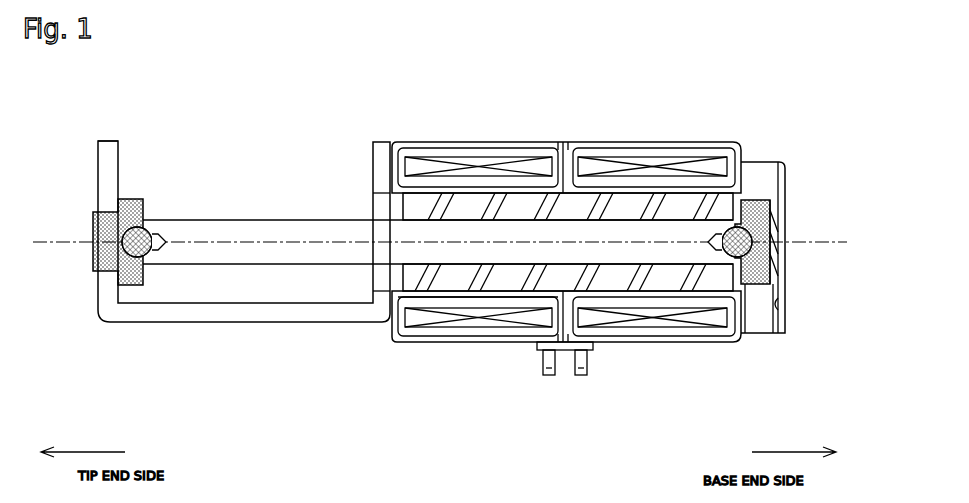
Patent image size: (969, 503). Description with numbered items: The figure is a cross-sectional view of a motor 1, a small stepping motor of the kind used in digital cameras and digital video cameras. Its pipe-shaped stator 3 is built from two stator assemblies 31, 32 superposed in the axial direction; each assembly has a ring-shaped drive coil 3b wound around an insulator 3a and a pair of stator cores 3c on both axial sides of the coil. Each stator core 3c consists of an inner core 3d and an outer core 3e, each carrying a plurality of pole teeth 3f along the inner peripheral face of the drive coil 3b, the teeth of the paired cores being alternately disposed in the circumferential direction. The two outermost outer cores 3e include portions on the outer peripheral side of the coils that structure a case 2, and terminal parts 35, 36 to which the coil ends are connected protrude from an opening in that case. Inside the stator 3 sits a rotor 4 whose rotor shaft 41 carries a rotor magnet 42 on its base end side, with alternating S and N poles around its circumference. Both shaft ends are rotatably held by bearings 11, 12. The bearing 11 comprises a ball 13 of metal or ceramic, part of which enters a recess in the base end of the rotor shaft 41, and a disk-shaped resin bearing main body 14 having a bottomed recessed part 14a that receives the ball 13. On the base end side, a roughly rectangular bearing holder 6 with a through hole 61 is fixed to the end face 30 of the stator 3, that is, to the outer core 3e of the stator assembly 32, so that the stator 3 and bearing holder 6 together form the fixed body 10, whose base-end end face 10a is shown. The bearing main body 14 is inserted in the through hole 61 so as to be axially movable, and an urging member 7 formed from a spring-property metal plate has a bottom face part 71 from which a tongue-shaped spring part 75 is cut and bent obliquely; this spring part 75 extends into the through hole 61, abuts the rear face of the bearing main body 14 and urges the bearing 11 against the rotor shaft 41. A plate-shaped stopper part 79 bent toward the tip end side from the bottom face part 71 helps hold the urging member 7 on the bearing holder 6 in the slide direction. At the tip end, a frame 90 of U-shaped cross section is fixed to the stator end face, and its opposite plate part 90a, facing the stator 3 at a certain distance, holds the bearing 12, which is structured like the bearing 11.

The motor 1 is at (281, 60).
The case 2 is at (646, 341).
The stator 3 is at (581, 269).
The insulator 3a is at (672, 306).
The drive coil 3b is at (486, 324).
The stator core 3c is at (457, 440).
The inner core 3d is at (560, 317).
The outer core 3e is at (758, 168).
The pole teeth 3f is at (452, 298).
The rotor 4 is at (447, 192).
The rotor shaft 41 is at (295, 224).
The rotor magnet 42 is at (406, 207).
The bearing holder 6 is at (796, 197).
The through hole 61 is at (772, 202).
The urging member 7 is at (785, 185).
The bottom face part 71 is at (786, 220).
The spring part 75 is at (782, 244).
The stopper part 79 is at (772, 164).
The fixed body 10 is at (633, 252).
The end face 10a is at (779, 305).
The bearing 11 is at (765, 359).
The bearing 12 is at (88, 259).
The ball 13 is at (752, 285).
The bearing main body 14 is at (763, 285).
The bottomed recessed part 14a is at (768, 260).
The end face 30 is at (732, 323).
The stator assembly 31 is at (563, 122).
The stator assembly 32 is at (742, 122).
The terminal part 35 is at (548, 376).
The terminal part 36 is at (581, 376).
The frame 90 is at (222, 308).
The opposite plate part 90a is at (107, 147).